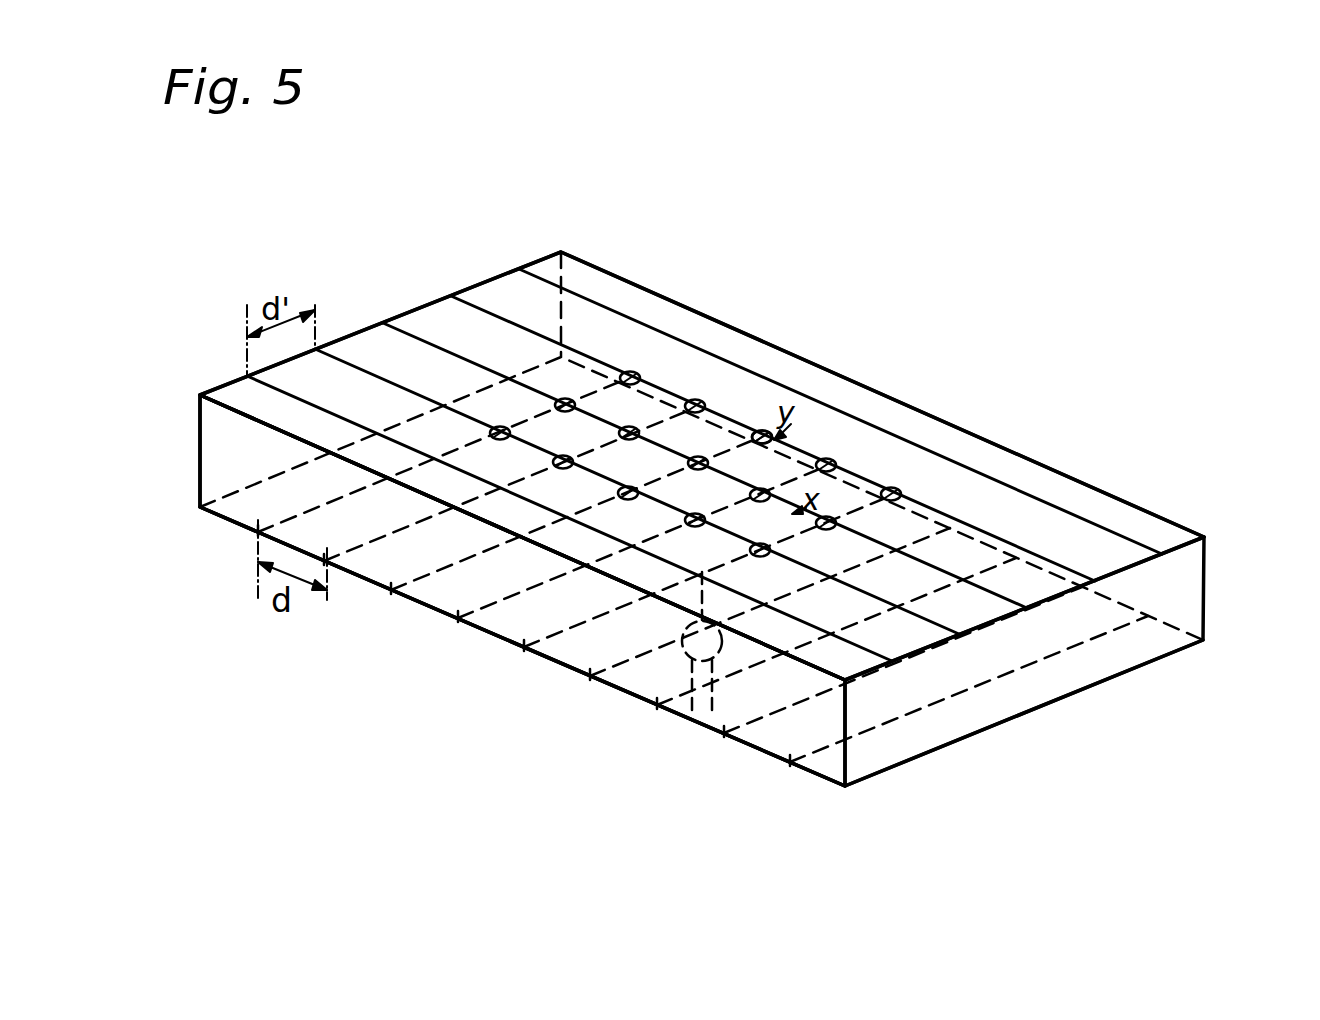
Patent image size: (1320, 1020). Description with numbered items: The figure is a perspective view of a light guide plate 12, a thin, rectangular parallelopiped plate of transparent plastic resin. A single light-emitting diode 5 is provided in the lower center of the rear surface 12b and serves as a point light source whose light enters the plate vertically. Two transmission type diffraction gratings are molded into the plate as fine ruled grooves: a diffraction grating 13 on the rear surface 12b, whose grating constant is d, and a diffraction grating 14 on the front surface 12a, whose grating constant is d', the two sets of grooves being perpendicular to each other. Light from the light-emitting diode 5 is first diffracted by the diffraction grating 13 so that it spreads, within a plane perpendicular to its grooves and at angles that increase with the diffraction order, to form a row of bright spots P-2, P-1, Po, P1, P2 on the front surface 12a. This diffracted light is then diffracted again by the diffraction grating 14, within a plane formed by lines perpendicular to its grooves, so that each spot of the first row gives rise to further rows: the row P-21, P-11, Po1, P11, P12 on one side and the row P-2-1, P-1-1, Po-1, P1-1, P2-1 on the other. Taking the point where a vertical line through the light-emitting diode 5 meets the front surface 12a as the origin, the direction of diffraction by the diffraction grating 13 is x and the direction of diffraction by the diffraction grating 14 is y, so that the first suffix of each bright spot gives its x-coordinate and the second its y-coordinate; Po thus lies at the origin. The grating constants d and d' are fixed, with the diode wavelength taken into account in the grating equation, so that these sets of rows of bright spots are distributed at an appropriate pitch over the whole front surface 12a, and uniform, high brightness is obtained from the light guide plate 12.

The light-emitting diode 5 is at (687, 650).
The light guide plate 12 is at (1207, 589).
The front surface 12a is at (1073, 502).
The rear surface 12b is at (748, 746).
The diffraction grating 13 is at (461, 618).
The diffraction grating 14 is at (938, 456).
The bright spot P-2 is at (567, 398).
The bright spot P-21 is at (631, 427).
The bright spot P-1 is at (696, 399).
The bright spot P-11 is at (701, 457).
The bright spot Po is at (762, 431).
The bright spot Po1 is at (764, 398).
The bright spot P1 is at (829, 459).
The bright spot P11 is at (830, 516).
The bright spot P2 is at (894, 487).
The bright spot P12 is at (898, 488).
The bright spot P-2-1 is at (494, 429).
The bright spot P-1-1 is at (561, 456).
The bright spot Po-1 is at (626, 488).
The bright spot P1-1 is at (700, 509).
The bright spot P2-1 is at (757, 546).